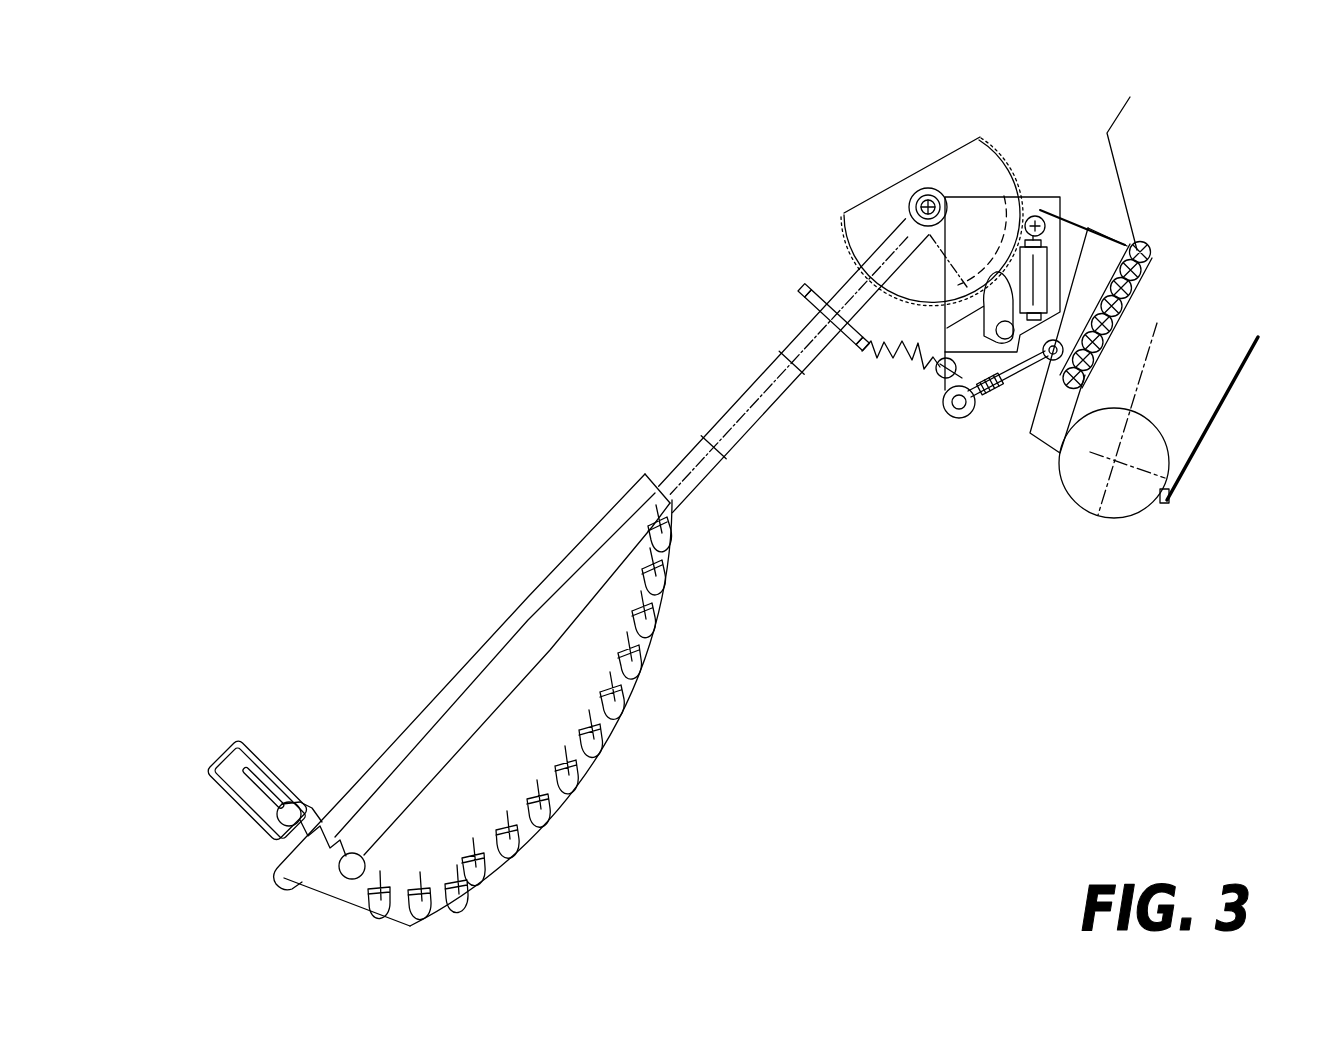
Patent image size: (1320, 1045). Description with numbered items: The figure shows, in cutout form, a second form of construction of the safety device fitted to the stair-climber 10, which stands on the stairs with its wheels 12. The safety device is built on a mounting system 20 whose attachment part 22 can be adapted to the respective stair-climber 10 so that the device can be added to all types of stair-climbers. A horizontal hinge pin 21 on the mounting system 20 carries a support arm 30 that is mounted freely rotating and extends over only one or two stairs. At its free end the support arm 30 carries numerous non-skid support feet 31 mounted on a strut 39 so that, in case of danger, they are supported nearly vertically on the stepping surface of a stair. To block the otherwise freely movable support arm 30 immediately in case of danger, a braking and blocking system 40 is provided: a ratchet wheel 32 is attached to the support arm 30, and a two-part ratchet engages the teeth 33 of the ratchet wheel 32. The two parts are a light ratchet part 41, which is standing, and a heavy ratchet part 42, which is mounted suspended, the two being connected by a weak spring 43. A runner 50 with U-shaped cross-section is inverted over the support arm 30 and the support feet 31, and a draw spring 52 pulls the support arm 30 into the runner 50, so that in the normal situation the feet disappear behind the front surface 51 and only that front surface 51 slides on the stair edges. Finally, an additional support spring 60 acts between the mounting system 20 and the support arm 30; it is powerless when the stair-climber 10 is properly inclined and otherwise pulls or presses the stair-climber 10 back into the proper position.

The stair-climber system 10 is at (1187, 393).
The wheels 12 is at (1130, 490).
The mounting system 20 is at (1063, 242).
The horizontal hinge pin 21 is at (935, 198).
The attachment part 22 is at (1147, 262).
The support arm 30 is at (727, 413).
The non-skid support feet 31 is at (560, 817).
The ratchet wheel 32 is at (884, 207).
The teeth 33 is at (848, 214).
The strut 39 is at (504, 788).
The braking and blocking system 40 is at (1040, 190).
The light ratchet part 41 is at (948, 328).
The heavy ratchet part 42 is at (1072, 236).
The weak spring 43 is at (993, 385).
The runner 50 is at (520, 618).
The front surface 51 is at (665, 604).
The draw spring 52 is at (283, 878).
The support spring 60 is at (908, 366).